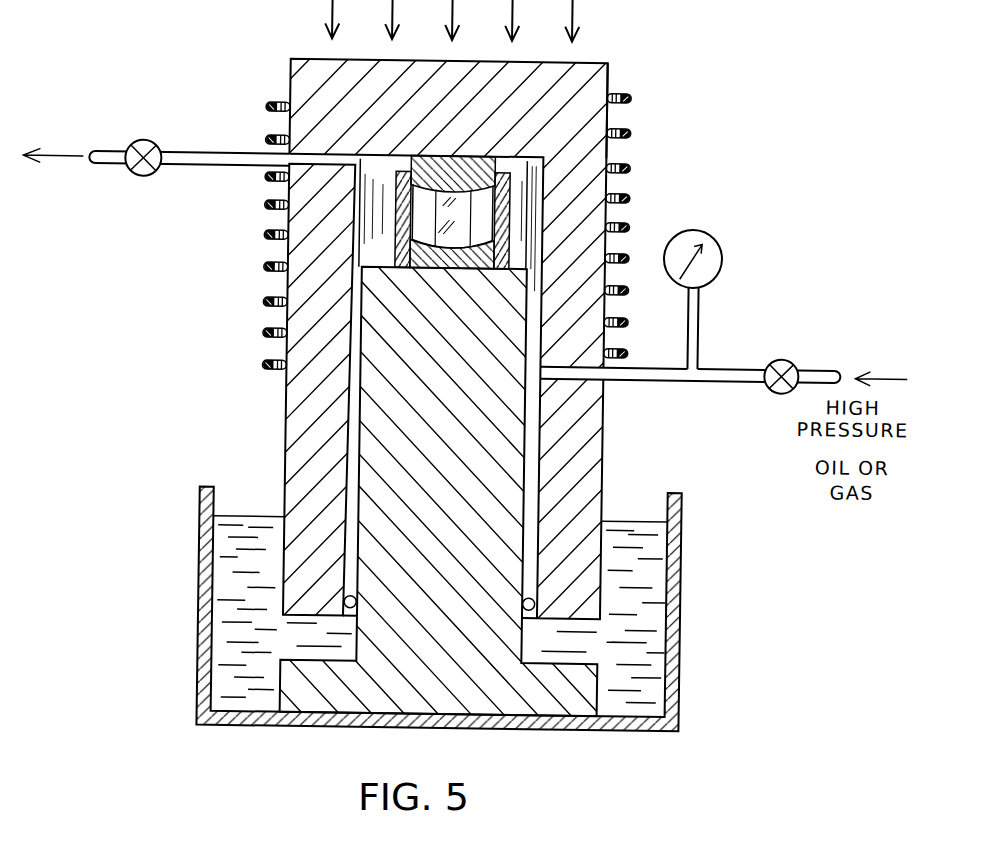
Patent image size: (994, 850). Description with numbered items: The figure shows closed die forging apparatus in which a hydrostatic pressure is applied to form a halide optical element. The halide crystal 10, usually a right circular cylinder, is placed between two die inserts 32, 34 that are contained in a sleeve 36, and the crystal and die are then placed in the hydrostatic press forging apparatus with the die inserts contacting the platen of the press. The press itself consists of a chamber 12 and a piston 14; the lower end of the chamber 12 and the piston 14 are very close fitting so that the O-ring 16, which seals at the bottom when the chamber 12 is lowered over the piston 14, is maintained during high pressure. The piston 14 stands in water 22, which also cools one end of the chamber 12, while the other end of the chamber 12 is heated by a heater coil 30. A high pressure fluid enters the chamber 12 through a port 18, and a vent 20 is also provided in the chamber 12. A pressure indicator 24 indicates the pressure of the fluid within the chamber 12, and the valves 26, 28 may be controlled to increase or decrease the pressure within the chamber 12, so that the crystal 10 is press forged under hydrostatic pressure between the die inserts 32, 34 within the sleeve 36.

The halide crystal 10 is at (448, 242).
The chamber 12 is at (590, 462).
The piston 14 is at (390, 401).
The O-ring 16 is at (357, 592).
The port 18 is at (600, 386).
The vent 20 is at (314, 152).
The water 22 is at (656, 662).
The pressure indicator 24 is at (695, 227).
The valve 26 is at (779, 355).
The valve 28 is at (139, 142).
The heater coil 30 is at (626, 96).
The die insert 32 is at (476, 160).
The die insert 34 is at (472, 262).
The sleeve 36 is at (495, 236).